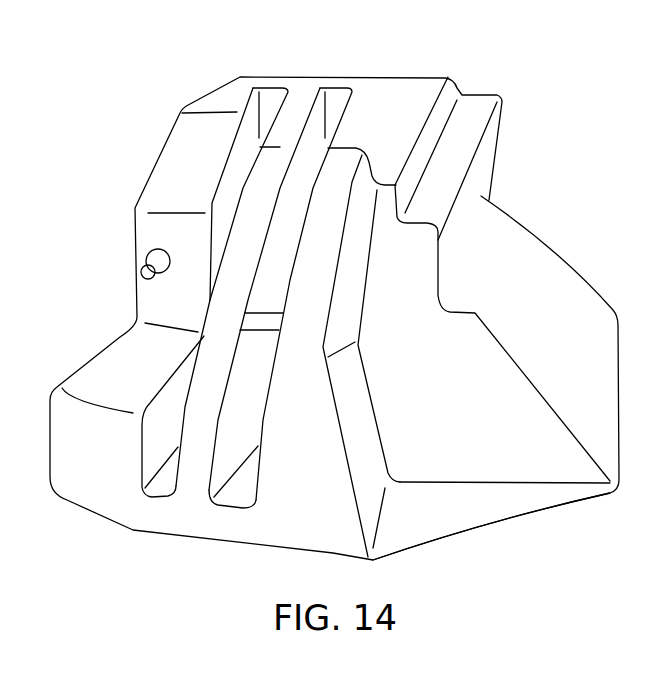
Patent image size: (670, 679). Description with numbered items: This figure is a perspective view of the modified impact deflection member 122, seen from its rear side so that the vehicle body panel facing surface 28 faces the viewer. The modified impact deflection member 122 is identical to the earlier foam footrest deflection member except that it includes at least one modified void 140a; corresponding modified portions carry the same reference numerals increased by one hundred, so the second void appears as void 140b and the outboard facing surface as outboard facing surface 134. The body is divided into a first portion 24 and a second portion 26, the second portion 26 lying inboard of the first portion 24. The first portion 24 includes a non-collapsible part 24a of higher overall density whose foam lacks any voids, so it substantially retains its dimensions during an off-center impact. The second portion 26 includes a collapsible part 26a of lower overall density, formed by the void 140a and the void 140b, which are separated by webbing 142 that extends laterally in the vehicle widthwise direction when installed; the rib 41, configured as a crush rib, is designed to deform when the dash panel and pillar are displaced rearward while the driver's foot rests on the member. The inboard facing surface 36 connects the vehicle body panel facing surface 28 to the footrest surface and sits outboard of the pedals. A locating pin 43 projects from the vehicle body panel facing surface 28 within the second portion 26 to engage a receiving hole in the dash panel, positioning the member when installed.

The modified impact deflection member 122 is at (480, 31).
The sloped rear surface 134 is at (520, 262).
The modified void 140a is at (337, 99).
The second slot 140b is at (272, 99).
The rib 41 is at (247, 233).
The locating pin 43 is at (145, 258).
The inboard facing surface 36 is at (91, 360).
The second portion 26 is at (112, 493).
The collapsible part 26a is at (189, 487).
The webbing 142 is at (265, 308).
The vehicle body panel facing surface 28 is at (290, 499).
The non-collapsible part 24a is at (440, 439).
The first portion 24 is at (518, 460).